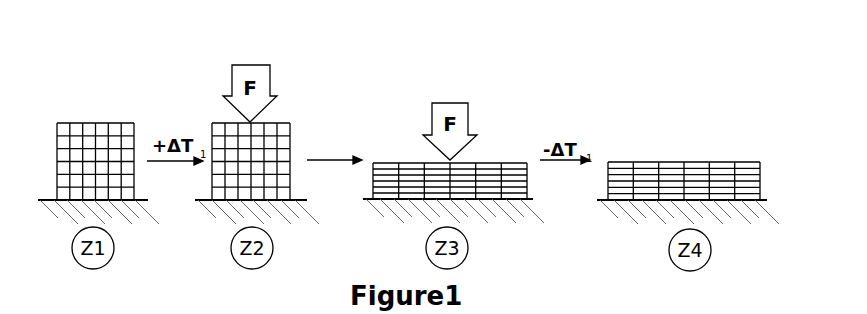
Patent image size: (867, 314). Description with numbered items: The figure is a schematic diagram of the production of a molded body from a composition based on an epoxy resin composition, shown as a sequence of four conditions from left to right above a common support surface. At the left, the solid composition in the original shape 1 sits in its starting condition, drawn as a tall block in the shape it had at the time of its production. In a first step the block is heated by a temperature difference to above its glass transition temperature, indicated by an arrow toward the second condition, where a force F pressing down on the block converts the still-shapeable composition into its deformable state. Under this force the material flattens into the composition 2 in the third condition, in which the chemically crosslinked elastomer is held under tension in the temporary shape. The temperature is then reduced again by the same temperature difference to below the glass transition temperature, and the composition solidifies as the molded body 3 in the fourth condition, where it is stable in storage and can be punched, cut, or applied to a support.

The composition in the original shape 1 is at (88, 138).
The composition (deformable) 2 is at (477, 163).
The molded body (temporary shape) 3 is at (680, 172).